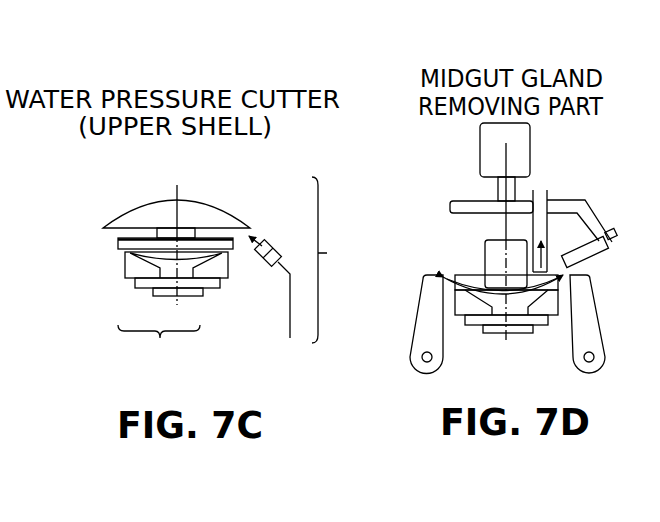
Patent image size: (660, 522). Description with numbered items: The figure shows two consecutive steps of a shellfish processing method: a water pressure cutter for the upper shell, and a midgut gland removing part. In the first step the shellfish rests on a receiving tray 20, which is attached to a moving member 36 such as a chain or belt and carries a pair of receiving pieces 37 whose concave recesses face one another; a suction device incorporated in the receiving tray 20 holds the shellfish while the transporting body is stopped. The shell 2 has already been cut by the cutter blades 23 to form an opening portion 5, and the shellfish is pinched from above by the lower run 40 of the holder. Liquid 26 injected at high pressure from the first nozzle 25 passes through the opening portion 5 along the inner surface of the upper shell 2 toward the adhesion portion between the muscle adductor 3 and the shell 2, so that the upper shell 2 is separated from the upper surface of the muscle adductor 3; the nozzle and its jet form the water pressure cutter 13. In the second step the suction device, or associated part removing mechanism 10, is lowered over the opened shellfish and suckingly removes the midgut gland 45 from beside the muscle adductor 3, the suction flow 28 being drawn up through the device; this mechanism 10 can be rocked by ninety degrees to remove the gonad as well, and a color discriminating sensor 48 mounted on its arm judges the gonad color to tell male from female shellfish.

In FIG. 7C, the shell 2 is at (193, 202).
In FIG. 7C, the muscle adductor 3 is at (168, 233).
In FIG. 7D, the muscle adductor 3 is at (492, 252).
In FIG. 7C, the opening portion 5 is at (123, 233).
In FIG. 7D, the suction device (associated part removing mechanism) 10 is at (547, 195).
In FIG. 7C, the water pressure cutter 13 is at (331, 260).
In FIG. 7C, the receiving tray 20 is at (159, 344).
In FIG. 7C, the cutter blade 23 is at (13, 308).
In FIG. 7C, the first nozzle 25 is at (276, 250).
In FIG. 7C, the liquid 26 is at (258, 238).
In FIG. 7D, the suction flow 28 is at (552, 270).
In FIG. 7C, the moving member 36 is at (207, 288).
In FIG. 7C, the receiving piece 37 is at (132, 283).
In FIG. 7C, the lower run 40 is at (13, 225).
In FIG. 7D, the midgut gland 45 is at (538, 325).
In FIG. 7D, the color discriminating sensor 48 is at (590, 253).